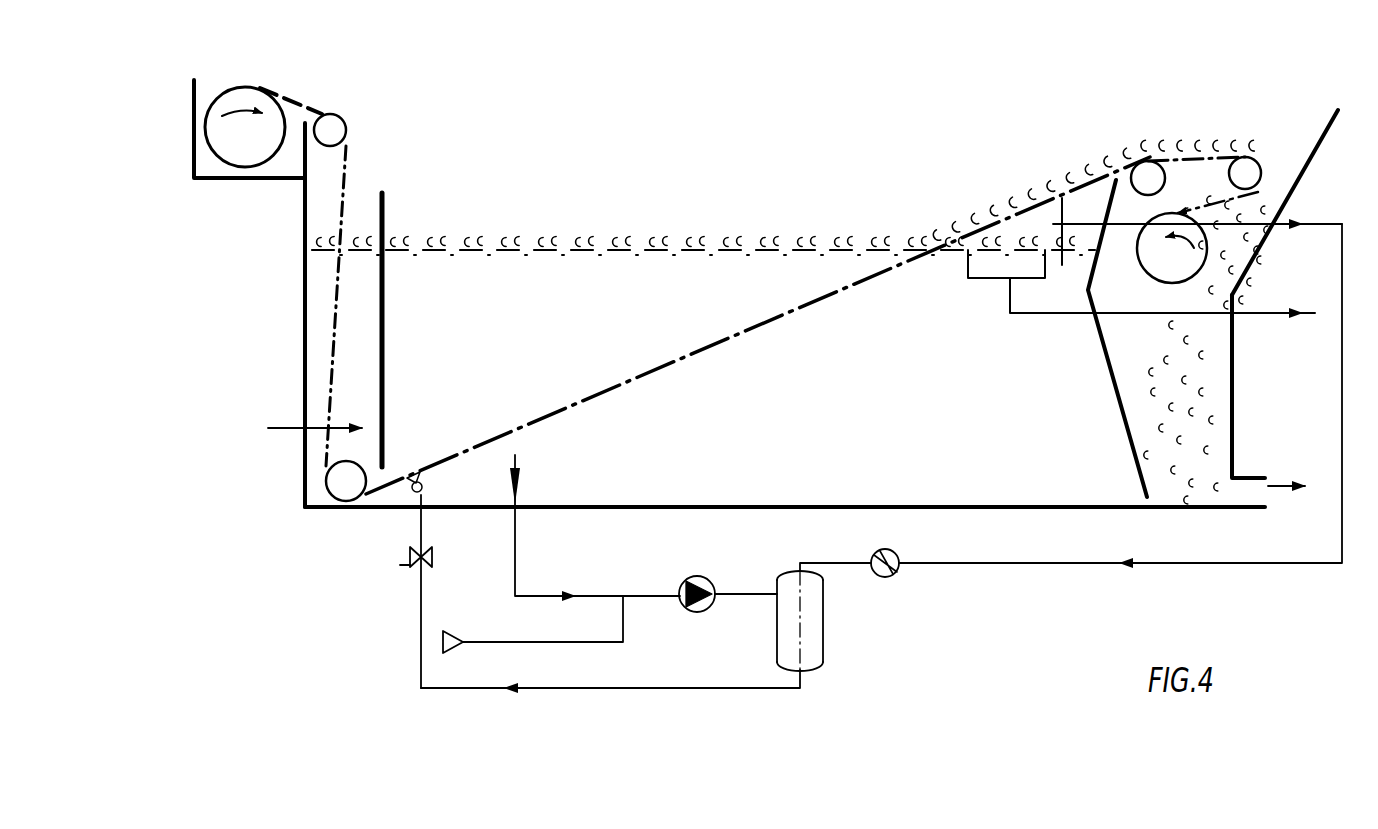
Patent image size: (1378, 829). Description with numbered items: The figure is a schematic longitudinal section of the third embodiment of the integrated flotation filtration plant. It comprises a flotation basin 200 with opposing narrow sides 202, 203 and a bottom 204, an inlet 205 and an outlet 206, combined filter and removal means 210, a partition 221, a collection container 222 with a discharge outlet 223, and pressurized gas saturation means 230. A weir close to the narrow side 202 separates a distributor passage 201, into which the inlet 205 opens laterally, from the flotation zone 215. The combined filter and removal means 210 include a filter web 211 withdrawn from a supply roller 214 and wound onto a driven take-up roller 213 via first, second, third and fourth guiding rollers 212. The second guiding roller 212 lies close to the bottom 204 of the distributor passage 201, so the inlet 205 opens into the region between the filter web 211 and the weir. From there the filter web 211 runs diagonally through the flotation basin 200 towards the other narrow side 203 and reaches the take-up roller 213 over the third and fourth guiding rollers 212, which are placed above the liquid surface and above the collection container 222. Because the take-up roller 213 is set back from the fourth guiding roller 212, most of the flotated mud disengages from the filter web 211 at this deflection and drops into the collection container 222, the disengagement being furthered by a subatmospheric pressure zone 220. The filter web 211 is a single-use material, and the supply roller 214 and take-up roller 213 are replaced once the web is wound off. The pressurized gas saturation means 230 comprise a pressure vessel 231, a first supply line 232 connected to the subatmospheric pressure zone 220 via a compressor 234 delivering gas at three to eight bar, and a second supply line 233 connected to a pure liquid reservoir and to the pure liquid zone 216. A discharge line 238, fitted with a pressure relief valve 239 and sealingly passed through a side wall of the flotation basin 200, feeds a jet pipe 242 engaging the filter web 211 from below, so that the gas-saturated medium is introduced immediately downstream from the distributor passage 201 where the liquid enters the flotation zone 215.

The flotation basin 200 is at (695, 176).
The distributor passage 201 is at (357, 208).
The narrow side 202 is at (305, 218).
The narrow side 203 is at (1234, 372).
The bottom 204 is at (728, 505).
The inlet 205 is at (286, 428).
The outlet 206 is at (1141, 281).
The combined filter and removal means 210 is at (590, 390).
The filter web 211 is at (737, 338).
The guiding rollers 212 is at (337, 128).
The take-up roller 213 is at (1185, 262).
The supply roller 214 is at (243, 96).
The flotation zone 215 is at (703, 291).
The pure liquid zone 216 is at (887, 433).
The subatmospheric pressure zone 220 is at (1170, 231).
The partition 221 is at (1298, 186).
The collection container 222 is at (1204, 350).
The discharge outlet 223 is at (1242, 477).
The pressurized gas saturation means 230 is at (858, 632).
The pressure vessel 231 is at (786, 628).
The first supply line 232 is at (992, 562).
The second supply line 233 is at (638, 595).
The compressor 234 is at (895, 577).
The discharge line 238 is at (654, 688).
The pressure relief valve 239 is at (408, 557).
The jet pipe 242 is at (424, 485).